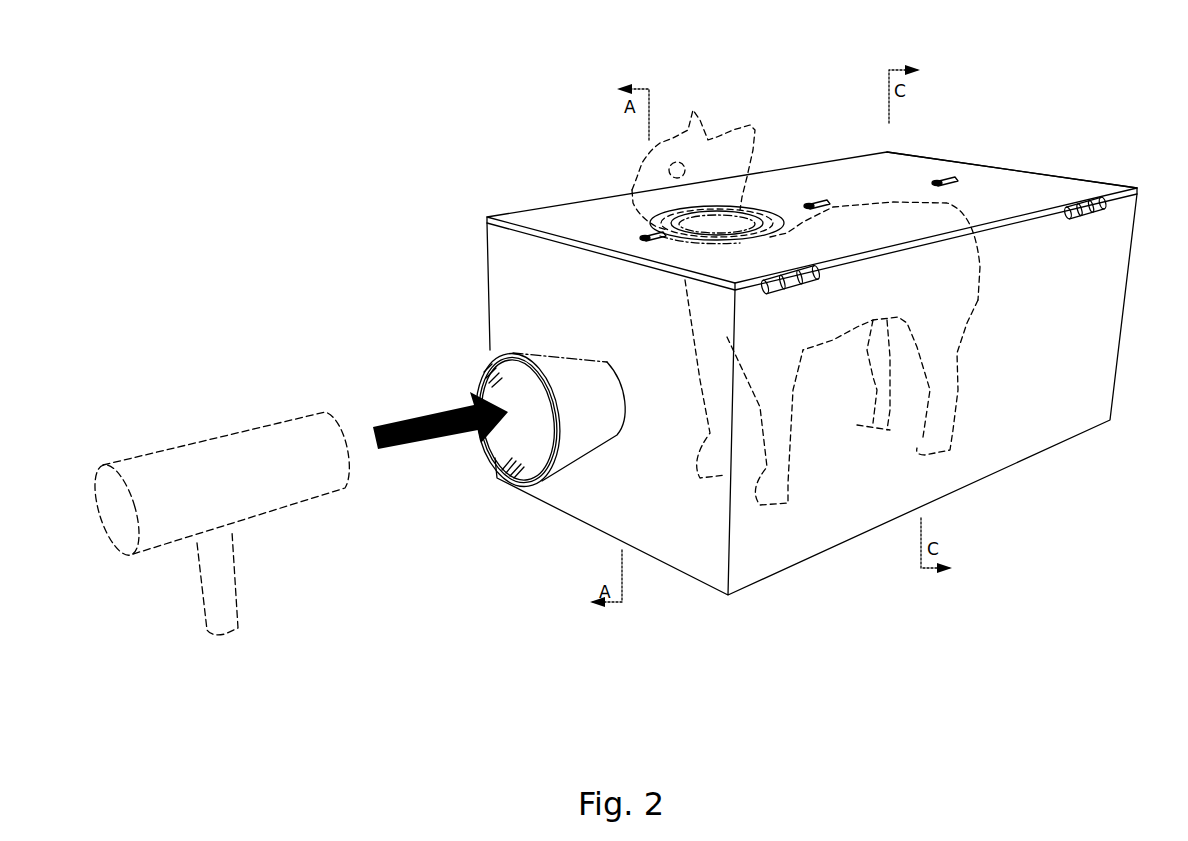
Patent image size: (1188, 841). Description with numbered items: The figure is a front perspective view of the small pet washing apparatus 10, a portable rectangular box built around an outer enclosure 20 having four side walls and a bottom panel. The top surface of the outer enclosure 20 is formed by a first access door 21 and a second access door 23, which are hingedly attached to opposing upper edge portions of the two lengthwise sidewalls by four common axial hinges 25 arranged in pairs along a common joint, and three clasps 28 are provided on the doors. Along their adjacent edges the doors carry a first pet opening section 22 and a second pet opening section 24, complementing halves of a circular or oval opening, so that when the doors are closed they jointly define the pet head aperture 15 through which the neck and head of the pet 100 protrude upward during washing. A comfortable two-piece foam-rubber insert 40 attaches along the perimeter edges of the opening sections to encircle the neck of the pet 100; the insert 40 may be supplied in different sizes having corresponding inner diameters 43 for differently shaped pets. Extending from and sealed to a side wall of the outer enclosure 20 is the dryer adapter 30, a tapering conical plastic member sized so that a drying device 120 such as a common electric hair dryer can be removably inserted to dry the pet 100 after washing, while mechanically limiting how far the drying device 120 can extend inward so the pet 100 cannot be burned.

The small pet washing apparatus 10 is at (132, 125).
The pet head aperture 15 is at (728, 227).
The outer enclosure 20 is at (525, 268).
The first access door 21 is at (1045, 177).
The first pet opening section 22 is at (702, 242).
The second access door 23 is at (935, 158).
The second pet opening section 24 is at (712, 208).
The axial hinges 25 is at (1097, 212).
The clasps 28 is at (648, 233).
The dryer adapter 30 is at (480, 365).
The foam-rubber insert 40 is at (745, 230).
The inner diameter 43 is at (697, 230).
The pet 100 is at (692, 110).
The drying device 120 is at (172, 463).